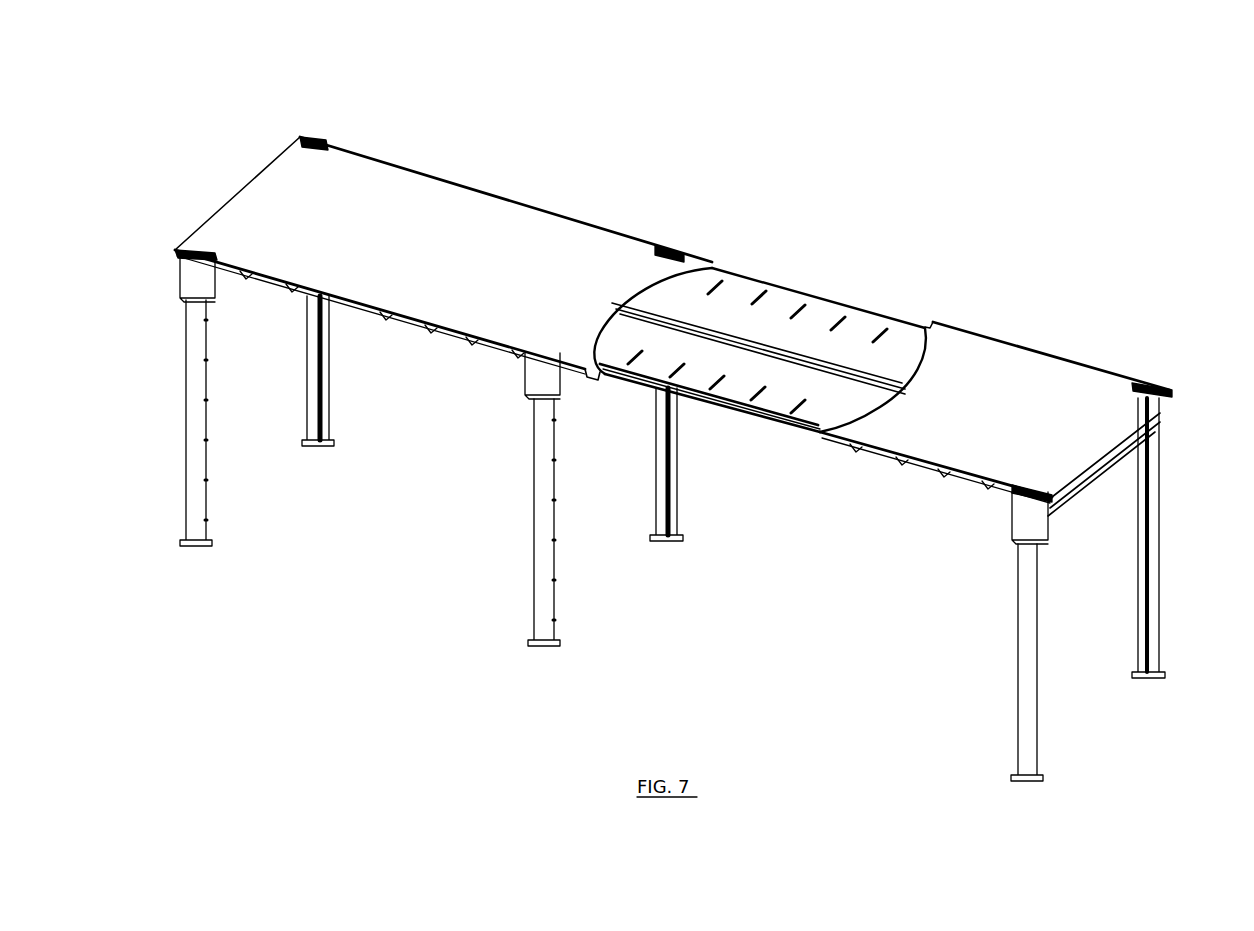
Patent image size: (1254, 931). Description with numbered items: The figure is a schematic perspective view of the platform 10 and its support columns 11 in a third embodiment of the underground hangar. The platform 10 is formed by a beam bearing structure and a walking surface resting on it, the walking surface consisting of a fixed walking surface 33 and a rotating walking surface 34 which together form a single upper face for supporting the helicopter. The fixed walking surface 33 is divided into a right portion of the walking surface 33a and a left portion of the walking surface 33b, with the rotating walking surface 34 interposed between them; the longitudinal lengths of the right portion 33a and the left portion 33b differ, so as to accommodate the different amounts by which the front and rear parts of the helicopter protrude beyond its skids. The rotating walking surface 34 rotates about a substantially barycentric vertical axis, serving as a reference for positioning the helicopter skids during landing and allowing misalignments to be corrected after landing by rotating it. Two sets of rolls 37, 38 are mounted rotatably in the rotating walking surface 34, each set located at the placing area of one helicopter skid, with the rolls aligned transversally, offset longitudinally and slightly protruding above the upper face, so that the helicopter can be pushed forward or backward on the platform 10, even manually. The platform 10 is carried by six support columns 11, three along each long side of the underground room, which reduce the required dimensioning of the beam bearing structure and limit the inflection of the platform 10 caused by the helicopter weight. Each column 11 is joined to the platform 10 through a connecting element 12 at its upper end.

The platform 10 is at (250, 145).
The support column 11 is at (305, 393).
The leg brackets 12 is at (200, 280).
The fixed walking surface 33 is at (543, 153).
The right portion of the walking surface 33a is at (437, 205).
The left portion of the walking surface 33b is at (1033, 395).
The rotating walking surface 34 is at (757, 325).
The set of rolls 37 is at (883, 322).
The set of rolls 38 is at (683, 378).